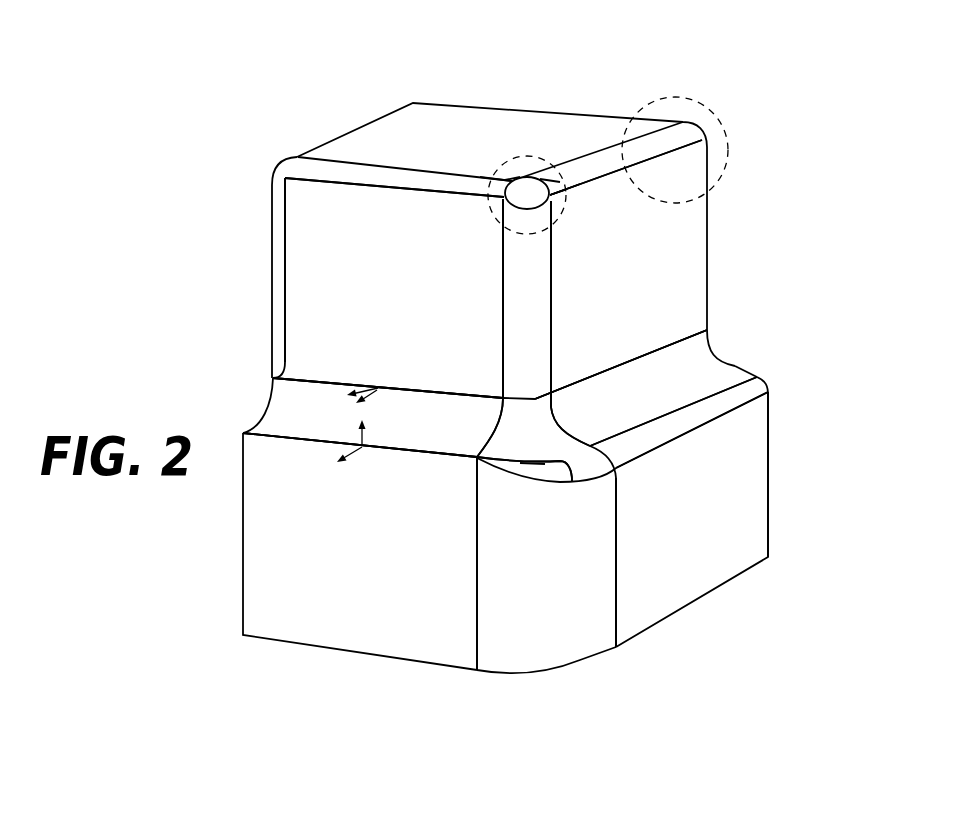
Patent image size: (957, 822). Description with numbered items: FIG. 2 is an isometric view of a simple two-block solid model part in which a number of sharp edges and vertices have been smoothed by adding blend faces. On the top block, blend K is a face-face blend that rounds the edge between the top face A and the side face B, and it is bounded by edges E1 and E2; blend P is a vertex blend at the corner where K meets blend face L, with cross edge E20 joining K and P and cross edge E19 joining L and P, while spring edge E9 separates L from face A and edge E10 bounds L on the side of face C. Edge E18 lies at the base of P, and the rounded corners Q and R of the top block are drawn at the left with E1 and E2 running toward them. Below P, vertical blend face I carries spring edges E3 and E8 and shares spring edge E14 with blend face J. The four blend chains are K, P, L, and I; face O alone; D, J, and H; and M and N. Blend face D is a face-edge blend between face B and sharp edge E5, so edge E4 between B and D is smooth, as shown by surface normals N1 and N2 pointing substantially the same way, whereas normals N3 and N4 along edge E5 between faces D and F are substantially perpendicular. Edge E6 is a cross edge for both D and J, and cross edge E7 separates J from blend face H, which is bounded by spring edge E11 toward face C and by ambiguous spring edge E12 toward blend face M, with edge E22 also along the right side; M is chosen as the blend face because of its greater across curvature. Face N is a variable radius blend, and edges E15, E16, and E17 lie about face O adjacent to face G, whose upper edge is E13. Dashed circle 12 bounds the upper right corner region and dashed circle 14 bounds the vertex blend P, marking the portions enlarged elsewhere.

The top face A is at (360, 161).
The face B is at (327, 215).
The face C is at (697, 181).
The blend face D is at (293, 433).
The face F is at (276, 478).
The lower front-right face G is at (658, 503).
The blend face H is at (711, 386).
The blend face I is at (529, 395).
The blend face J is at (533, 436).
The blend face M is at (647, 462).
The blend face O is at (500, 497).
The vertex blend P is at (530, 177).
The face-face blend K is at (497, 180).
The blend face L is at (565, 180).
The rounded corner R is at (279, 170).
The left side chamfer edge Q is at (279, 263).
The variable radius blend face N is at (533, 467).
The edge E1 is at (413, 168).
The edge E2 is at (413, 192).
The spring edge E3 is at (503, 282).
The smooth edge E4 is at (321, 381).
The sharp edge E5 is at (431, 455).
The cross edge E6 is at (496, 420).
The cross edge E7 is at (563, 427).
The spring edge E8 is at (551, 283).
The spring edge E9 is at (623, 142).
The edge E10 is at (650, 160).
The spring edge E11 is at (706, 332).
The spring edge E12 is at (758, 379).
The edge E13 is at (712, 430).
The spring edge E14 is at (537, 398).
The edge E15 is at (560, 472).
The edge E16 is at (598, 485).
The edge E17 is at (624, 470).
The edge E18 is at (550, 204).
The cross edge E19 is at (548, 180).
The cross edge E20 is at (517, 173).
The edge E22 is at (721, 354).
The surface normal N1 is at (366, 373).
The surface normal N2 is at (386, 410).
The surface normal N3 is at (384, 430).
The surface normal N4 is at (364, 468).
The circle 12 is at (705, 88).
The circle 14 is at (490, 221).